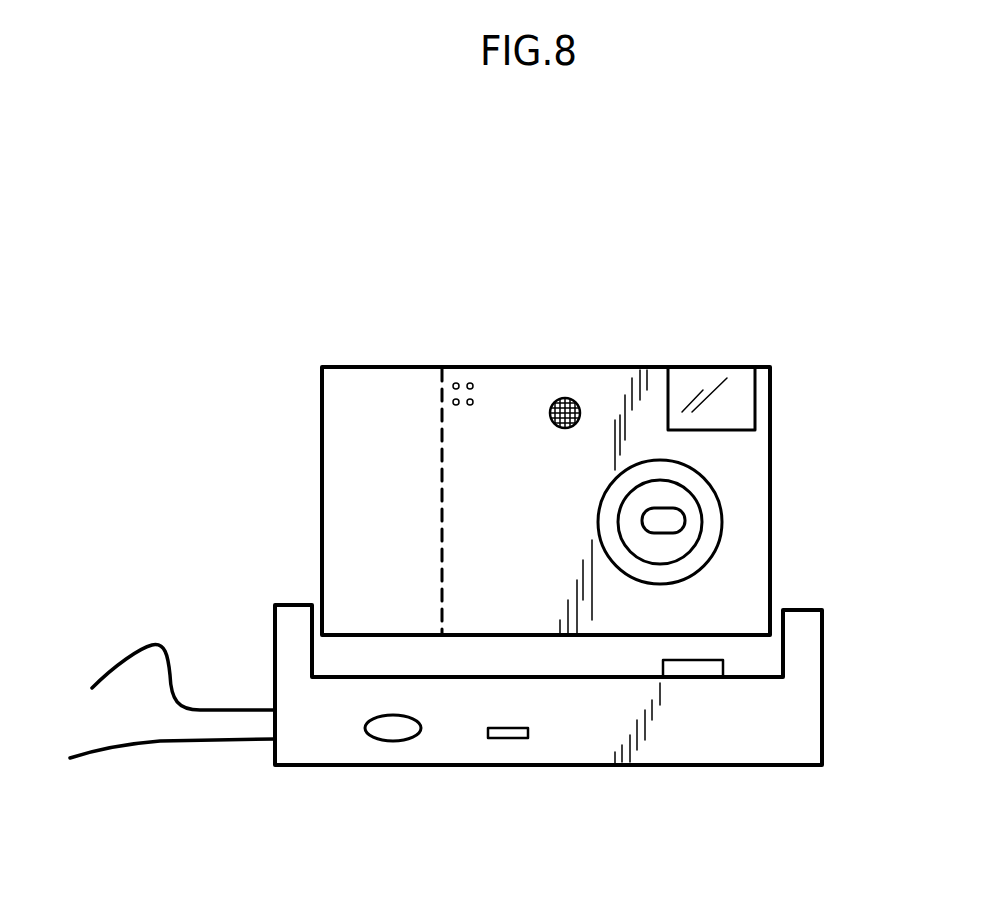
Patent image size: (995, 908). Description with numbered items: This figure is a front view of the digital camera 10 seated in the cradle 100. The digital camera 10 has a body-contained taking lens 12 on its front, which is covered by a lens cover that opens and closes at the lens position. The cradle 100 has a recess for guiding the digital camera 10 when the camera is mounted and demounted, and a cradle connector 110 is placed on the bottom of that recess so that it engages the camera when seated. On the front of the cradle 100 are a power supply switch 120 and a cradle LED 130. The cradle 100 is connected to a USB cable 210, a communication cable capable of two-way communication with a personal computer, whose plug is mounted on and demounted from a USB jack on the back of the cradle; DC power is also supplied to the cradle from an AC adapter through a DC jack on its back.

The digital camera 10 is at (772, 310).
The taking lens 12 is at (657, 518).
The cradle 100 is at (675, 772).
The cradle connector 110 is at (725, 665).
The power supply switch 120 is at (395, 733).
The cradle LED 130 is at (510, 740).
The USB cable 210 is at (225, 742).